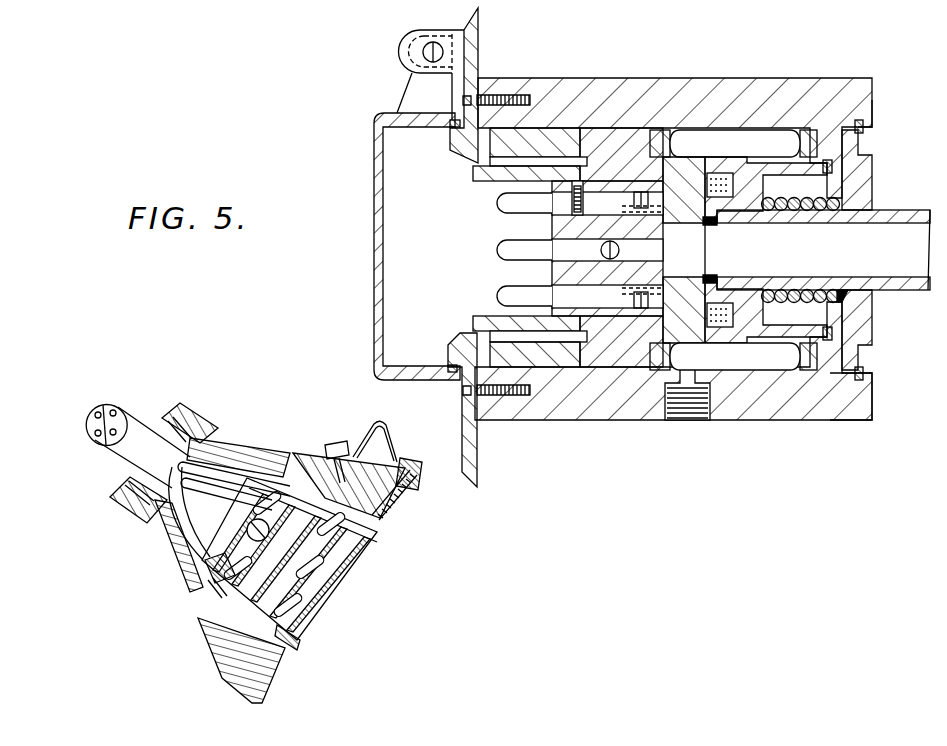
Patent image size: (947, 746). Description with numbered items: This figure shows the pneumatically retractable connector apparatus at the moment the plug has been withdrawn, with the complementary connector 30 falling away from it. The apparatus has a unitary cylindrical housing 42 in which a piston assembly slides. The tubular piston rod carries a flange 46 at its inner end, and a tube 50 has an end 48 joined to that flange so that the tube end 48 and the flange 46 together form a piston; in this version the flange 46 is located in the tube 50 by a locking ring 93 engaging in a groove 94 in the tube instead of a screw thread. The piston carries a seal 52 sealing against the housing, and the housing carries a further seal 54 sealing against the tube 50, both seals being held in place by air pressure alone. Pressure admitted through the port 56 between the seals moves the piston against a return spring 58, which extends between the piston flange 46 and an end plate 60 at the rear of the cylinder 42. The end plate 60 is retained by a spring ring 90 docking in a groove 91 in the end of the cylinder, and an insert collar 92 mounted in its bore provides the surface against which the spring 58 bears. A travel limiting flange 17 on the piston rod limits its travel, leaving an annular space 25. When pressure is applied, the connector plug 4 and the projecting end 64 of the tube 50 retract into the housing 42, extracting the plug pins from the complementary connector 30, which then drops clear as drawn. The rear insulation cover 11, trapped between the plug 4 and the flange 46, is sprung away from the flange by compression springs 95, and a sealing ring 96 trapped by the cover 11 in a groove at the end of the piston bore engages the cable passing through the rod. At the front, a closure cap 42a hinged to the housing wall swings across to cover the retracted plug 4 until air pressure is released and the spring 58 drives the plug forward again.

The connector plug 4 is at (476, 232).
The rear insulation cover 11 is at (677, 213).
The travel limiting flange 17 is at (790, 350).
The annular space 25 is at (735, 368).
The complementary connector 30 is at (138, 579).
The cylindrical housing 42 is at (636, 80).
The closure cap 42a is at (377, 258).
The flange 46 is at (738, 172).
The tube end 48 is at (896, 212).
The tube 50 is at (610, 335).
The seal 52 is at (808, 383).
The further seal 54 is at (660, 367).
The port 56 is at (680, 420).
The return spring 58 is at (832, 210).
The end plate 60 is at (860, 170).
The projecting end 64 is at (490, 318).
The spring ring 90 is at (863, 132).
The groove 91 is at (858, 120).
The insert collar 92 is at (870, 298).
The locking ring 93 is at (868, 320).
The groove 94 is at (868, 366).
The compression springs 95 is at (730, 292).
The sealing ring 96 is at (705, 227).